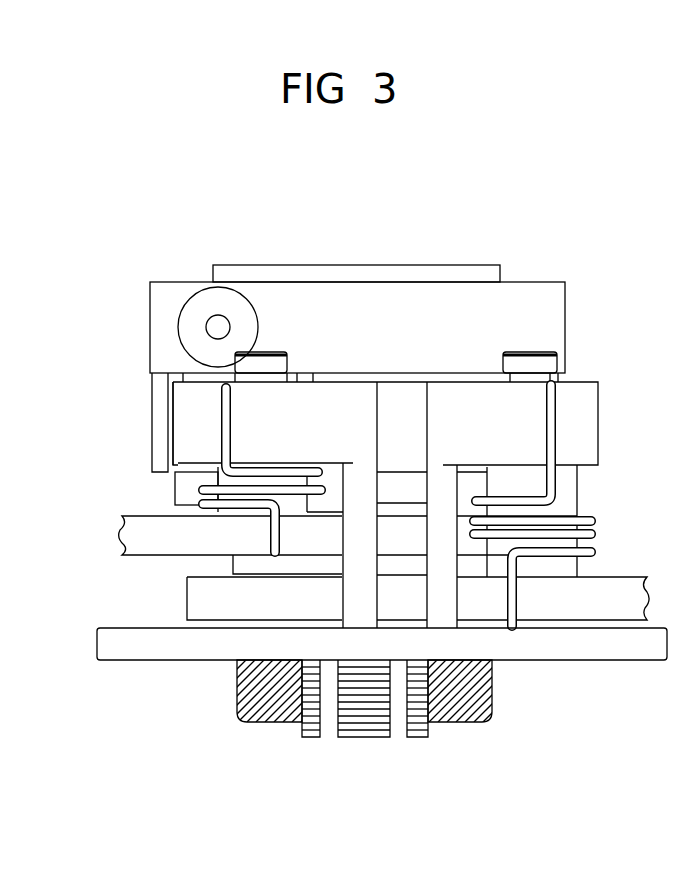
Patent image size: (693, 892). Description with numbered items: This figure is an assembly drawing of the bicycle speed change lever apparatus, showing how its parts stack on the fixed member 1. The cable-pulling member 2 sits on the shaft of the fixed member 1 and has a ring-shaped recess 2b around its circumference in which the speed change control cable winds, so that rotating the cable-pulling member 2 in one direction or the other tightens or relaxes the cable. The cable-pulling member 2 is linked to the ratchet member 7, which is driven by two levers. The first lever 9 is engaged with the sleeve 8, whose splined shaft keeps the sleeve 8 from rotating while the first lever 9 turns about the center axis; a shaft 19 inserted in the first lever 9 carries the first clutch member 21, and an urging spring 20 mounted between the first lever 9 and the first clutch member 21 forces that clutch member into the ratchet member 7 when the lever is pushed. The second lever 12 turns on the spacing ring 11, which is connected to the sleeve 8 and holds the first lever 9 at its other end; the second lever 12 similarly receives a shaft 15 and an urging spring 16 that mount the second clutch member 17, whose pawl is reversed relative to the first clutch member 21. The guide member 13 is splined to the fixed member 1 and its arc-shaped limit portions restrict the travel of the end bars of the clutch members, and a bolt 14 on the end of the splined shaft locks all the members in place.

The fixed member 1 is at (473, 268).
The cable-pulling member 2 is at (537, 295).
The ring-shaped recess 2b is at (203, 303).
The ratchet member 7 is at (148, 378).
The sleeve 8 is at (182, 493).
The first lever 9 is at (132, 540).
The spacing ring 11 is at (240, 567).
The second lever 12 is at (625, 578).
The guide member 13 is at (637, 650).
The bolt 14 is at (492, 697).
The shaft 15 is at (275, 357).
The urging spring 16 is at (232, 443).
The second clutch member 17 is at (183, 422).
The shaft 19 is at (540, 350).
The urging spring 20 is at (555, 432).
The first clutch member 21 is at (583, 392).